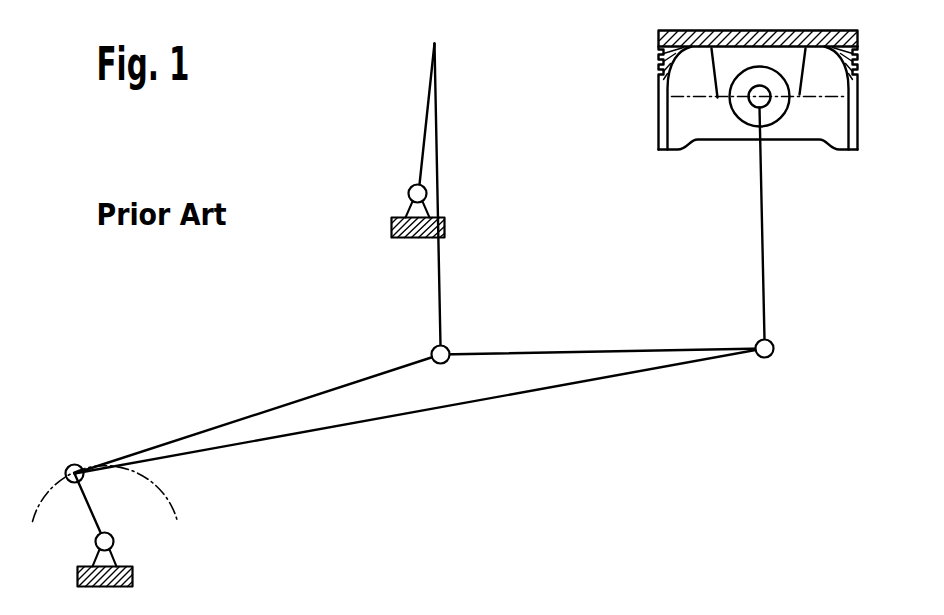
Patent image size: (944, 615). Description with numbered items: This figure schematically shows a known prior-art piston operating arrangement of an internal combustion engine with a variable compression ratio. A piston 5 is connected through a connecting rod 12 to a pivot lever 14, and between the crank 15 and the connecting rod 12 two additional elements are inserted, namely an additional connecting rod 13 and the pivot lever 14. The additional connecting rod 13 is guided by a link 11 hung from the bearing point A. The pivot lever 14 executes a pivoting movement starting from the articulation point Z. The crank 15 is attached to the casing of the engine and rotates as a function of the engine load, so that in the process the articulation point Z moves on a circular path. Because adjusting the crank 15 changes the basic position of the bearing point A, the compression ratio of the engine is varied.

The piston 5 is at (705, 98).
The link pivoted at fixed point 11 is at (428, 122).
The connecting rod 12 is at (764, 203).
The additional connecting rod 13 is at (442, 267).
The pivot lever 14 is at (455, 405).
The crank 15 is at (86, 508).
The bearing point A is at (437, 42).
The articulation point Z is at (66, 465).